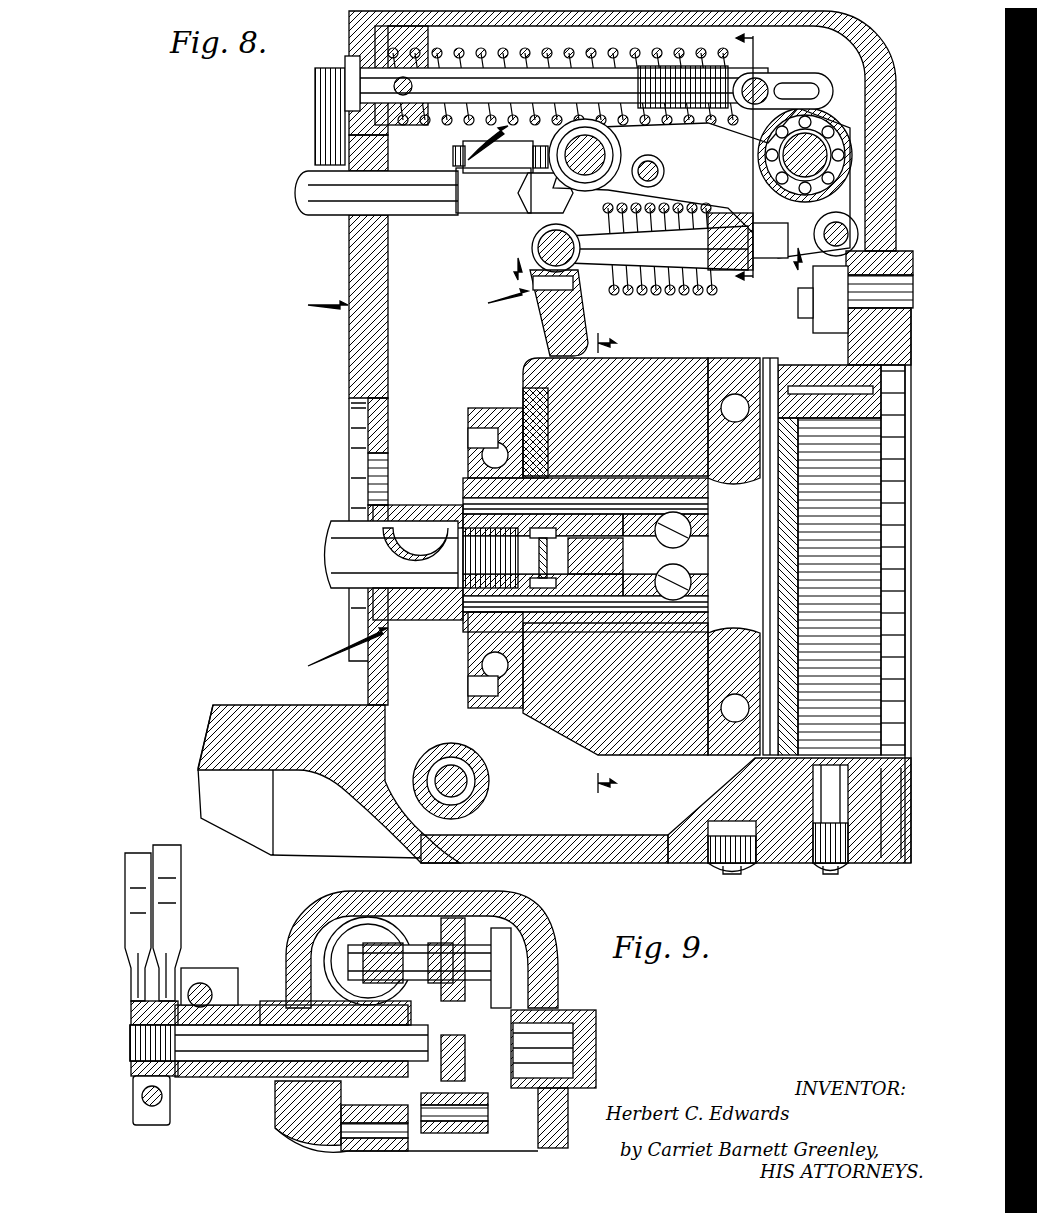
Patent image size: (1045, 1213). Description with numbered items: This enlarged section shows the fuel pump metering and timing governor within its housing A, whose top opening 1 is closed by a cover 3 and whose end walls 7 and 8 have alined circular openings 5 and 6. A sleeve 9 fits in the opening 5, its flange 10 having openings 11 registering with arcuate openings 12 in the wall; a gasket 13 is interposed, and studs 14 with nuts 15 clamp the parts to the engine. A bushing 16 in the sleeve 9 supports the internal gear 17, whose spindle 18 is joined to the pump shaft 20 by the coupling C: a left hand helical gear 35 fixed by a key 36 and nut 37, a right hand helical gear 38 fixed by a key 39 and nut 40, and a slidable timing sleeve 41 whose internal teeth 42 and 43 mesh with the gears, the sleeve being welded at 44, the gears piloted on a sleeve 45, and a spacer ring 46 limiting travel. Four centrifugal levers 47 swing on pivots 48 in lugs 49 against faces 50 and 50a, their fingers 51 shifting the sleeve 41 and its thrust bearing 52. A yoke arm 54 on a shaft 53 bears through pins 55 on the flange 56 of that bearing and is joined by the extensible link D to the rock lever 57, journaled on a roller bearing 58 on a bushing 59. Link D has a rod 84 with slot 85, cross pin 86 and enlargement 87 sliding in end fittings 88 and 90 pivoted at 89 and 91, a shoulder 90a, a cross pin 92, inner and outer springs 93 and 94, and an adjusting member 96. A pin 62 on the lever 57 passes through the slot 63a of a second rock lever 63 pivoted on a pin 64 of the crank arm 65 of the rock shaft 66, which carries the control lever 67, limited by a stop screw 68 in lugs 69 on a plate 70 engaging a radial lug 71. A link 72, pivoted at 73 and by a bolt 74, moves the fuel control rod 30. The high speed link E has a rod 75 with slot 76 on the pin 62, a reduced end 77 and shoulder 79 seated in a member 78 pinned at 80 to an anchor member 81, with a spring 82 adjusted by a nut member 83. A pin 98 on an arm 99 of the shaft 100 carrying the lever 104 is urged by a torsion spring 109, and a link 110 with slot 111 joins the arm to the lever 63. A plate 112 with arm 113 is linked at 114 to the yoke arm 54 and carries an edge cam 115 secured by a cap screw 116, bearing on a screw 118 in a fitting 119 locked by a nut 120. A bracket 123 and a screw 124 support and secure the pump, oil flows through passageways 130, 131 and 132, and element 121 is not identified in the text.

In FIG. 8, the top opening 1 is at (850, 148).
In FIG. 9, the top opening 1 is at (520, 990).
In FIG. 8, the removable cover 3 is at (865, 48).
In FIG. 9, the removable cover 3 is at (315, 900).
In FIG. 8, the circular opening 5 is at (860, 855).
In FIG. 8, the circular opening 6 is at (378, 452).
In FIG. 8, the engine opposing end wall 7 is at (872, 222).
In FIG. 8, the pump opposing end wall 8 is at (360, 352).
In FIG. 8, the cylindrical sleeve 9 is at (778, 866).
In FIG. 8, the outstanding flange 10 is at (875, 888).
In FIG. 8, the circular openings 11 is at (904, 301).
In FIG. 8, the arcuate openings 12 is at (874, 301).
In FIG. 8, the gasket 13 is at (900, 860).
In FIG. 9, the gasket 13 is at (415, 880).
In FIG. 8, the threaded studs 14 is at (779, 341).
In FIG. 8, the nuts 15 is at (723, 552).
In FIG. 8, the bushing 16 is at (866, 385).
In FIG. 8, the internal gear 17 is at (885, 530).
In FIG. 8, the spindle portion 18 is at (690, 560).
In FIG. 8, the pump shaft 20 is at (330, 560).
In FIG. 8, the fuel control rod 30 is at (300, 186).
In FIG. 8, the left hand helical gear 35 is at (385, 616).
In FIG. 8, the key 36 is at (432, 515).
In FIG. 8, the nut 37 is at (415, 610).
In FIG. 8, the right hand helical gear 38 is at (585, 720).
In FIG. 8, the key 39 is at (675, 520).
In FIG. 8, the nut 40 is at (580, 660).
In FIG. 8, the timing sleeve 41 is at (731, 650).
In FIG. 8, the internal teeth 42 is at (610, 745).
In FIG. 8, the internal teeth 43 is at (460, 630).
In FIG. 8, the weld 44 is at (540, 690).
In FIG. 8, the pilot sleeve 45 is at (564, 721).
In FIG. 8, the spacer ring 46 is at (545, 400).
In FIG. 8, the centrifugal levers 47 is at (575, 380).
In FIG. 8, the pivots 48 is at (727, 398).
In FIG. 8, the lugs 49 is at (712, 400).
In FIG. 8, the abutment faces 50 is at (700, 755).
In FIG. 8, the abutment faces 50a is at (693, 343).
In FIG. 8, the finger 51 is at (710, 462).
In FIG. 8, the ball thrust bearing 52 is at (478, 447).
In FIG. 8, the horizontal shaft 53 is at (480, 788).
In FIG. 8, the yoke arm 54 is at (525, 385).
In FIG. 8, the horizontal pins 55 is at (460, 555).
In FIG. 8, the peripheral flange 56 is at (512, 388).
In FIG. 8, the rock lever 57 is at (850, 192).
In FIG. 9, the rock lever 57 is at (330, 1095).
In FIG. 8, the roller bearing 58 is at (860, 168).
In FIG. 9, the roller bearing 58 is at (365, 1030).
In FIG. 9, the bushing 59 is at (275, 998).
In FIG. 8, the horizontal pin 62 is at (745, 82).
In FIG. 9, the horizontal pin 62 is at (505, 972).
In FIG. 9, the second rock lever 63 is at (470, 895).
In FIG. 9, the elongated slot 63a is at (520, 905).
In FIG. 9, the horizontal pin 64 is at (450, 1020).
In FIG. 9, the crank arm 65 is at (440, 1045).
In FIG. 8, the rock shaft 66 is at (770, 150).
In FIG. 9, the rock shaft 66 is at (225, 1050).
In FIG. 9, the control lever 67 is at (215, 915).
In FIG. 9, the stop screw 68 is at (228, 915).
In FIG. 9, the lugs 69 is at (185, 972).
In FIG. 9, the plate 70 is at (225, 965).
In FIG. 9, the radial lug 71 is at (240, 960).
In FIG. 9, the link 72 is at (430, 1125).
In FIG. 9, the pivot 73 is at (545, 1100).
In FIG. 8, the bolt 74 is at (455, 210).
In FIG. 8, the rod 75 is at (590, 62).
In FIG. 9, the rod 75 is at (396, 935).
In FIG. 8, the elongated slot 76 is at (770, 95).
In FIG. 9, the elongated slot 76 is at (368, 935).
In FIG. 8, the reduced end portion 77 is at (455, 62).
In FIG. 8, the pivoted member 78 is at (492, 62).
In FIG. 8, the shoulder 79 is at (519, 53).
In FIG. 8, the pivot pin 80 is at (350, 84).
In FIG. 8, the anchor member 81 is at (340, 52).
In FIG. 8, the coil tension spring 82 is at (665, 62).
In FIG. 9, the coil tension spring 82 is at (345, 935).
In FIG. 8, the nut member 83 is at (699, 141).
In FIG. 9, the nut member 83 is at (330, 930).
In FIG. 8, the rod 84 is at (757, 288).
In FIG. 8, the elongated slot 85 is at (602, 301).
In FIG. 8, the diametrical pin 86 is at (774, 308).
In FIG. 8, the enlarged middle portion 87 is at (717, 323).
In FIG. 8, the end fitting 88 is at (481, 253).
In FIG. 8, the pivot 89 is at (531, 221).
In FIG. 8, the end fitting 90 is at (784, 328).
In FIG. 9, the end fitting 90 is at (345, 1145).
In FIG. 8, the abutment shoulder 90a is at (745, 173).
In FIG. 8, the pivot 91 is at (842, 228).
In FIG. 9, the pivot 91 is at (370, 1140).
In FIG. 8, the cross pin 92 is at (632, 301).
In FIG. 8, the inner spring 93 is at (664, 308).
In FIG. 8, the outer spring 94 is at (540, 300).
In FIG. 8, the threaded member 96 is at (739, 321).
In FIG. 8, the pin 98 is at (555, 62).
In FIG. 8, the arm 99 is at (531, 203).
In FIG. 8, the horizontal shaft 100 is at (570, 211).
In FIG. 9, the manually operable lever 104 is at (148, 840).
In FIG. 8, the spiral torsion spring 109 is at (480, 193).
In FIG. 8, the link 110 is at (625, 62).
In FIG. 9, the link 110 is at (446, 935).
In FIG. 8, the elongated slot 111 is at (495, 153).
In FIG. 8, the plate 112 is at (650, 128).
In FIG. 8, the radially extending arm 113 is at (735, 133).
In FIG. 8, the link 114 is at (510, 273).
In FIG. 8, the edge cam 115 is at (570, 112).
In FIG. 8, the cap screw 116 is at (650, 165).
In FIG. 8, the screw 118 is at (458, 150).
In FIG. 8, the fitting 119 is at (455, 183).
In FIG. 8, the nut 120 is at (493, 237).
In FIG. 8, the bolt 121 is at (660, 168).
In FIG. 8, the bracket 123 is at (240, 700).
In FIG. 8, the screw 124 is at (308, 140).
In FIG. 8, the vertical passageway 130 is at (805, 860).
In FIG. 8, the annular passageway 131 is at (740, 700).
In FIG. 8, the passageway 132 is at (735, 628).
In FIG. 8, the governor housing A is at (665, 868).
In FIG. 9, the governor housing A is at (560, 1135).
In FIG. 8, the angularly adjustable coupling C is at (299, 663).
In FIG. 8, the extensible link connection D is at (475, 301).
In FIG. 8, the extensible link E is at (409, 158).